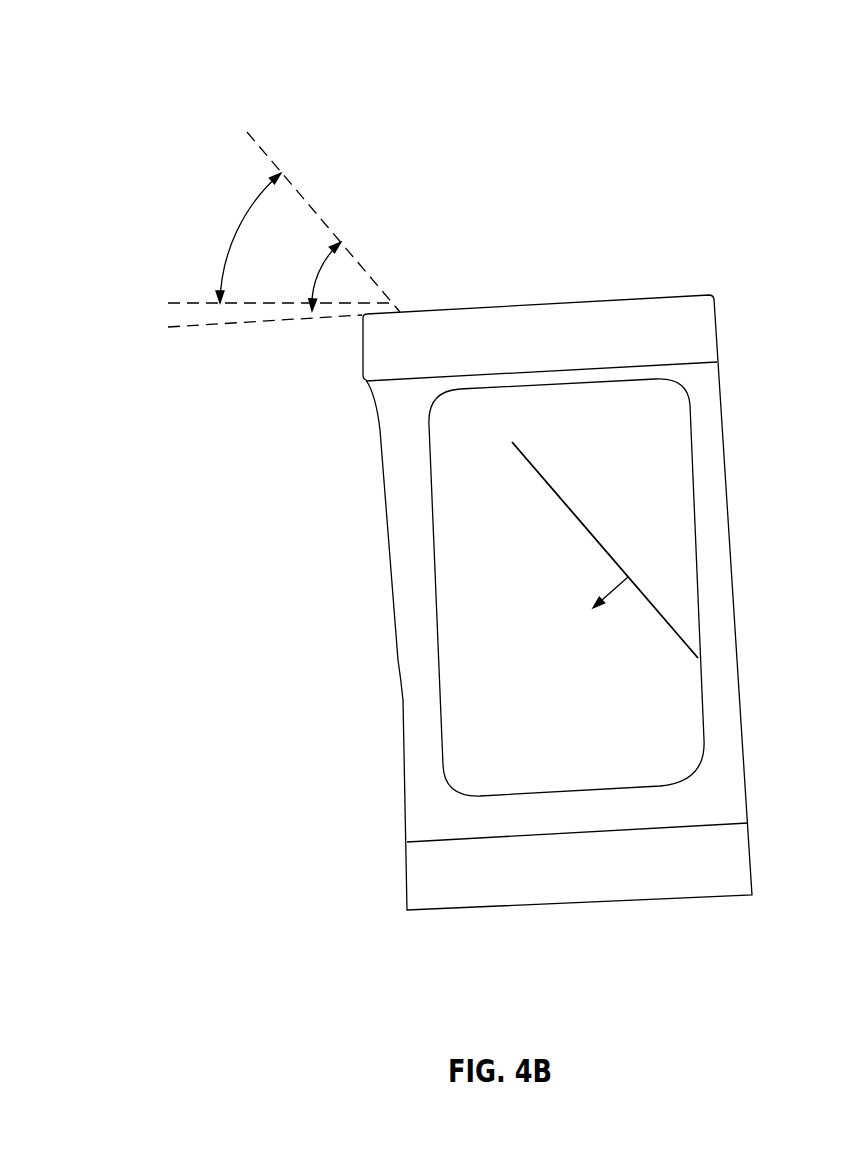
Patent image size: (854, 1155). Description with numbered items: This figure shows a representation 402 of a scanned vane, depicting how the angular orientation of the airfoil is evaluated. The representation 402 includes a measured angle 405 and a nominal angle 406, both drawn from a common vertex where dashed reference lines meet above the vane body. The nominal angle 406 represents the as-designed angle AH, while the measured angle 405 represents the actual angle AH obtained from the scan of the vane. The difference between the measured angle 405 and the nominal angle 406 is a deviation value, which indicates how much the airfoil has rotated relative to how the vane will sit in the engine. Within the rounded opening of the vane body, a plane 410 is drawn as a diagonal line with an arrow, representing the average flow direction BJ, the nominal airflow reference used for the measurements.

The representation 402 is at (130, 38).
The measured angle 405 is at (322, 275).
The nominal angle 406 is at (240, 232).
The plane 410 is at (600, 550).